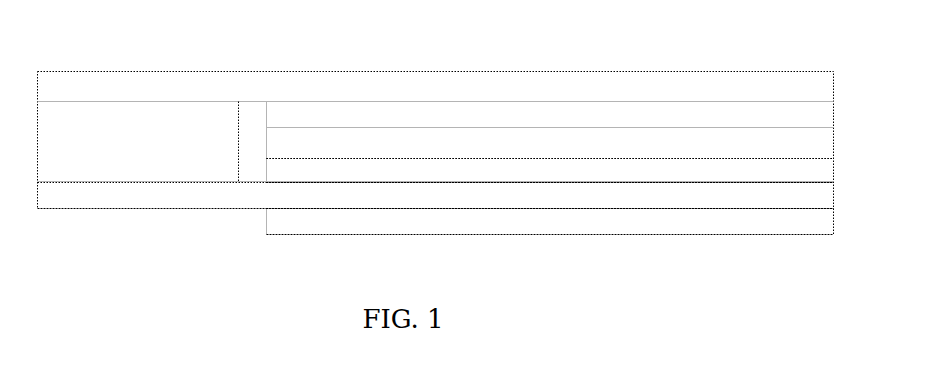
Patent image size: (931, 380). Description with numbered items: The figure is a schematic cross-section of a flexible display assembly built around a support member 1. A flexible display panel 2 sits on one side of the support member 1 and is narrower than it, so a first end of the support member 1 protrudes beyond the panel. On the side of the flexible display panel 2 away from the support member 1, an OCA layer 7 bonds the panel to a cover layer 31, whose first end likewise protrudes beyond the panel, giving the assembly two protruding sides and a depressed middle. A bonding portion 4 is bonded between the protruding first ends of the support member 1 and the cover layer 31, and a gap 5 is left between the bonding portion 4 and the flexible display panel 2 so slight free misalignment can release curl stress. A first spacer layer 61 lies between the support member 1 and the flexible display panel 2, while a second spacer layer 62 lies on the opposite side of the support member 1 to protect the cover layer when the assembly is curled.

The support member 1 is at (137, 200).
The flexible display panel 2 is at (538, 138).
The cover layer 31 is at (654, 95).
The bonding portion 4 is at (165, 118).
The gap 5 is at (253, 118).
The OCA layer 7 is at (407, 118).
The first spacer layer 61 is at (541, 173).
The second spacer layer 62 is at (423, 220).